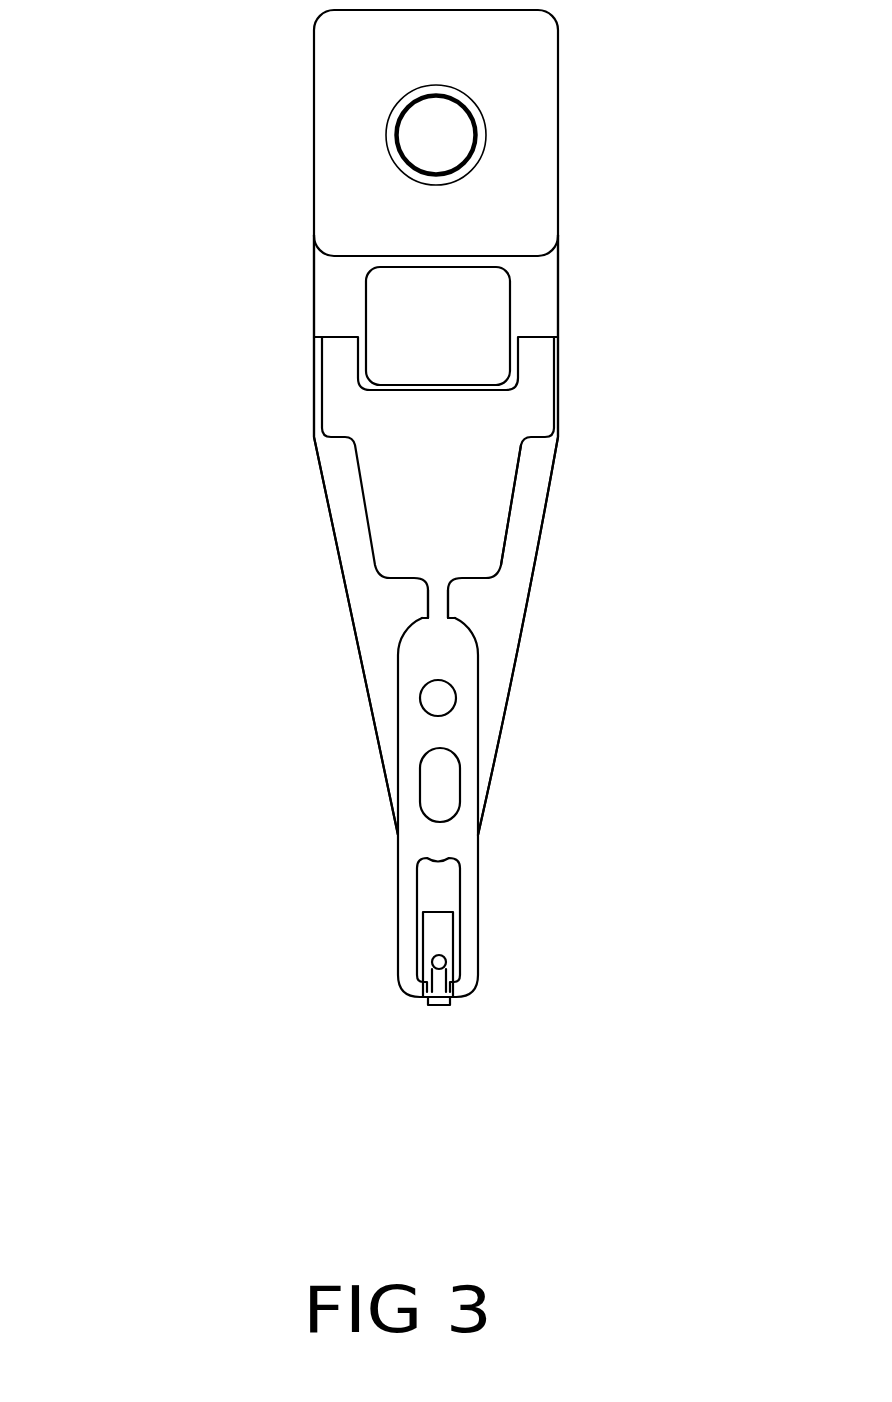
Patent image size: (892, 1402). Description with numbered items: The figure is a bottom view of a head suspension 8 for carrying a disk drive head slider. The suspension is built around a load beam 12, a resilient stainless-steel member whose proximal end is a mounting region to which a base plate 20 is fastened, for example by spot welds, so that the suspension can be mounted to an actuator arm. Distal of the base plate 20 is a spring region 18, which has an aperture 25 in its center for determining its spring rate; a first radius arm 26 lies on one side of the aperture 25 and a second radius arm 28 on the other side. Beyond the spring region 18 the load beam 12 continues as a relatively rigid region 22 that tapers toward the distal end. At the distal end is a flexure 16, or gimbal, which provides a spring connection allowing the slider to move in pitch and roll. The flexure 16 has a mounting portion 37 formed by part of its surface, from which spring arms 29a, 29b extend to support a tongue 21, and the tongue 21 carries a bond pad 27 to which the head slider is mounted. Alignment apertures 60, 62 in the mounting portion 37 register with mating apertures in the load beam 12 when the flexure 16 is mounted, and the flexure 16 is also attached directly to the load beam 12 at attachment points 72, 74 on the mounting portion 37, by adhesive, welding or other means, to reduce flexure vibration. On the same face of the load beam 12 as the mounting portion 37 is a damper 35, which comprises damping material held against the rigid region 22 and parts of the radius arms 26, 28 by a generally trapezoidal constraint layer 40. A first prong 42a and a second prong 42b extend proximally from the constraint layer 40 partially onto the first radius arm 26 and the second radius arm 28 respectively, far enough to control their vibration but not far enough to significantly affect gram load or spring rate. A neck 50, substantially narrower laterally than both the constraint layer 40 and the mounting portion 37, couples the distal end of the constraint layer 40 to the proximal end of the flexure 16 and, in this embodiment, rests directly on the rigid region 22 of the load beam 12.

The head suspension 8 is at (168, 541).
The load beam 12 is at (306, 438).
The flexure 16 is at (383, 888).
The spring region 18 is at (314, 378).
The base plate 20 is at (558, 63).
The tongue 21 is at (445, 908).
The rigid region 22 is at (517, 637).
The aperture 25 is at (495, 340).
The first radius arm 26 is at (314, 280).
The bond pad 27 is at (439, 969).
The second radius arm 28 is at (558, 280).
The spring arm 29a is at (423, 955).
The spring arm 29b is at (480, 952).
The damper 35 is at (522, 505).
The mounting portion 37 is at (478, 722).
The constraint layer 40 is at (520, 455).
The first prong 42a is at (339, 337).
The second prong 42b is at (533, 337).
The neck 50 is at (447, 600).
The alignment aperture 60 is at (460, 794).
The alignment aperture 62 is at (418, 705).
The attachment point 72 is at (437, 658).
The attachment point 74 is at (440, 843).